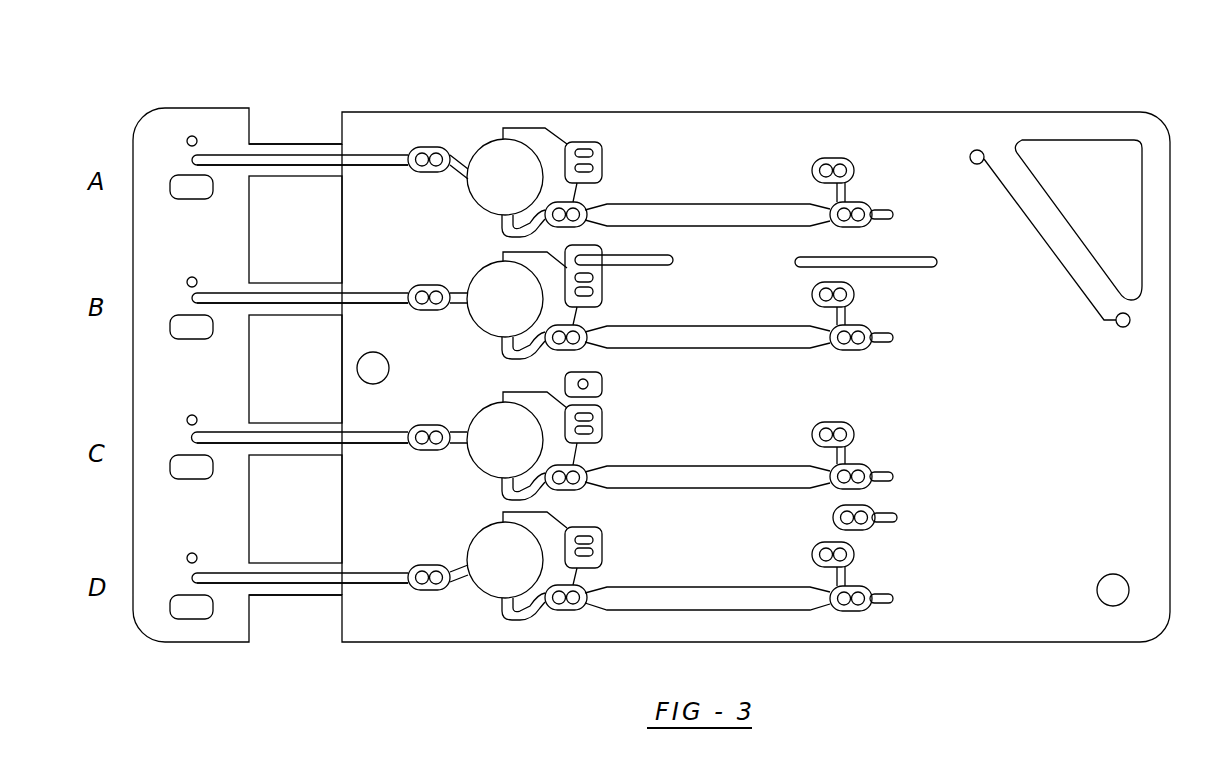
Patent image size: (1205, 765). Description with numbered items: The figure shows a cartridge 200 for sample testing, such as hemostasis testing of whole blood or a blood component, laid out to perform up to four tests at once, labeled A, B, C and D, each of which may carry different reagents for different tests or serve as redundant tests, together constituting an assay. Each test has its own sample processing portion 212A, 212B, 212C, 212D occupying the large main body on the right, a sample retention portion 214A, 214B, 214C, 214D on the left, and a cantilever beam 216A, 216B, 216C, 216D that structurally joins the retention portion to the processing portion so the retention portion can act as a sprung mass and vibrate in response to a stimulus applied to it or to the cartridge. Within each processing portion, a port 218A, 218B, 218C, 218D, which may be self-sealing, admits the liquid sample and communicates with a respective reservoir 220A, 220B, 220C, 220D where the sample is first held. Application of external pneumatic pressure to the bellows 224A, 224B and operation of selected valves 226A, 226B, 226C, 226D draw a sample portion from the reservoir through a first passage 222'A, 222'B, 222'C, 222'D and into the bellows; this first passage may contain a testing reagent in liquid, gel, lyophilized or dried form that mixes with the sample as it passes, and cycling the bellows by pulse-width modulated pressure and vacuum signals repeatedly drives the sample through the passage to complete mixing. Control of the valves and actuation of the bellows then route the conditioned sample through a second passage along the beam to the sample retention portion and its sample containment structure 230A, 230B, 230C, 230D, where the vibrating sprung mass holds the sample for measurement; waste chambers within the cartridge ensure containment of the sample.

The cartridge 200 is at (887, 112).
The sample processing portion 212A is at (887, 157).
The sample processing portion 212B is at (930, 338).
The sample processing portion 212C is at (937, 473).
The sample processing portion 212D is at (930, 585).
The sample retention portion 214A is at (208, 145).
The sample retention portion 214B is at (213, 282).
The sample retention portion 214C is at (213, 420).
The sample retention portion 214D is at (213, 562).
The beam 216A is at (304, 143).
The beam 216B is at (316, 283).
The beam 216C is at (313, 423).
The beam 216D is at (322, 598).
The port 218A is at (892, 213).
The port 218B is at (890, 333).
The port 218C is at (890, 471).
The port 218D is at (893, 598).
The reservoir 220A is at (728, 202).
The reservoir 220B is at (693, 325).
The reservoir 220C is at (693, 465).
The reservoir 220D is at (693, 590).
The first passage 222'A is at (488, 225).
The first passage 222'B is at (484, 349).
The first passage 222'C is at (488, 493).
The first passage 222'D is at (501, 645).
The bellows 224A is at (538, 155).
The bellows 224B is at (420, 285).
The valve 226A is at (440, 147).
The valve 226B is at (855, 290).
The valve 226C is at (437, 427).
The valve 226D is at (437, 565).
The sample containment structure 230A is at (188, 160).
The sample containment structure 230B is at (188, 296).
The sample containment structure 230C is at (190, 437).
The sample containment structure 230D is at (190, 578).